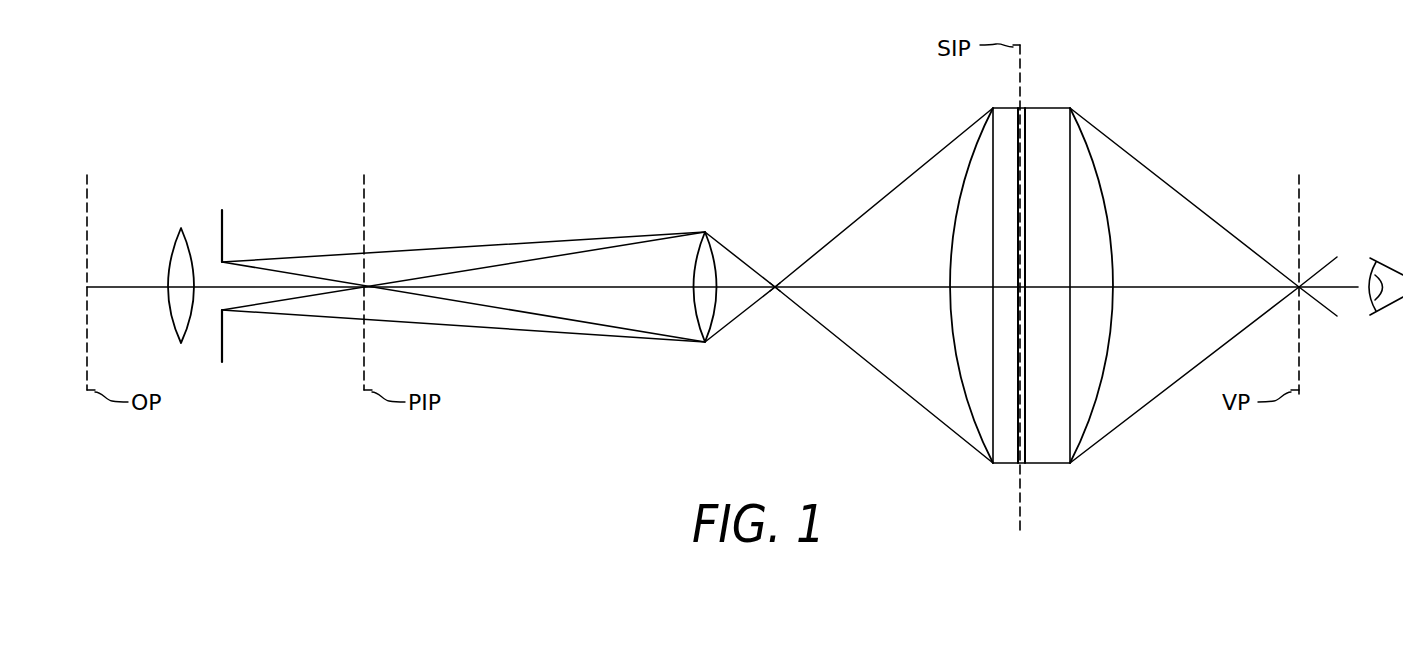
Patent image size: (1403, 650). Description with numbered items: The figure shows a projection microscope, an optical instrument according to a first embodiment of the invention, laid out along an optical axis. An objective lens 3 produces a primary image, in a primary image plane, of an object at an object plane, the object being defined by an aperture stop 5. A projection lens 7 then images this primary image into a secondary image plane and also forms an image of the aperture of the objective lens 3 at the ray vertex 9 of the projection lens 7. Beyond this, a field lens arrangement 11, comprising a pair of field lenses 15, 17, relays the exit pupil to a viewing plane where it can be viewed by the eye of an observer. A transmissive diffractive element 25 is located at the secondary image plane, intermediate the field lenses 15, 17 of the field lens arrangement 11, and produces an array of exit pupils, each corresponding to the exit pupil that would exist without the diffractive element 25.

The objective lens 3 is at (178, 237).
The aperture stop 5 is at (224, 339).
The projection lens 7 is at (700, 244).
The ray vertex 9 is at (776, 290).
The field lens arrangement 11 is at (1039, 283).
The field lens 15 is at (987, 465).
The field lens 17 is at (1073, 465).
The diffractive element 25 is at (1026, 440).